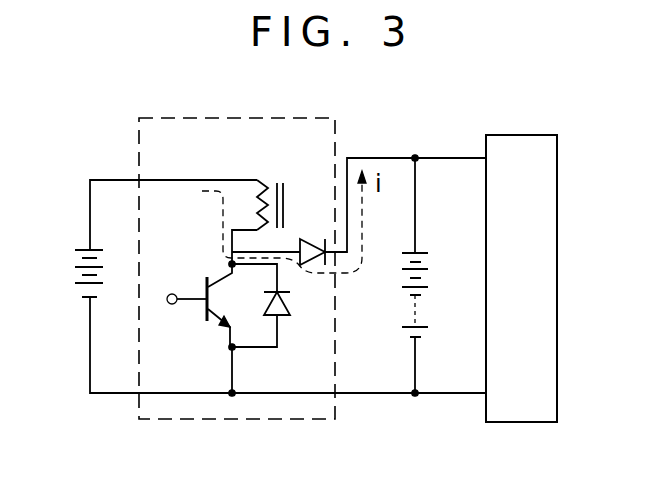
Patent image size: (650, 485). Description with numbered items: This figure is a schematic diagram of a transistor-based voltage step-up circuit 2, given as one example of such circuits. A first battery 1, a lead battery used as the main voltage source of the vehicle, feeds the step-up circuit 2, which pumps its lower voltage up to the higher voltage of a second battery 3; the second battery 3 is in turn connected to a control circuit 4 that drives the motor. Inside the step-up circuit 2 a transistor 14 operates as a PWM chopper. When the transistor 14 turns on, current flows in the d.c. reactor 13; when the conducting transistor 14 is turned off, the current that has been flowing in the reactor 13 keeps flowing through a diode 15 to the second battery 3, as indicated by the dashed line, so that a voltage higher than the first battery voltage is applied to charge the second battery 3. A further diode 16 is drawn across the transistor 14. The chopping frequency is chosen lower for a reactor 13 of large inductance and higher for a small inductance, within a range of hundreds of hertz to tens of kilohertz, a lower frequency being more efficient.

The first battery 1 is at (72, 266).
The voltage step-up circuit 2 is at (258, 402).
The second battery 3 is at (430, 279).
The control circuit 4 is at (543, 336).
The d.c. reactor 13 is at (268, 184).
The transistor 14 is at (213, 318).
The diode 15 is at (315, 238).
The diode 16 is at (280, 320).